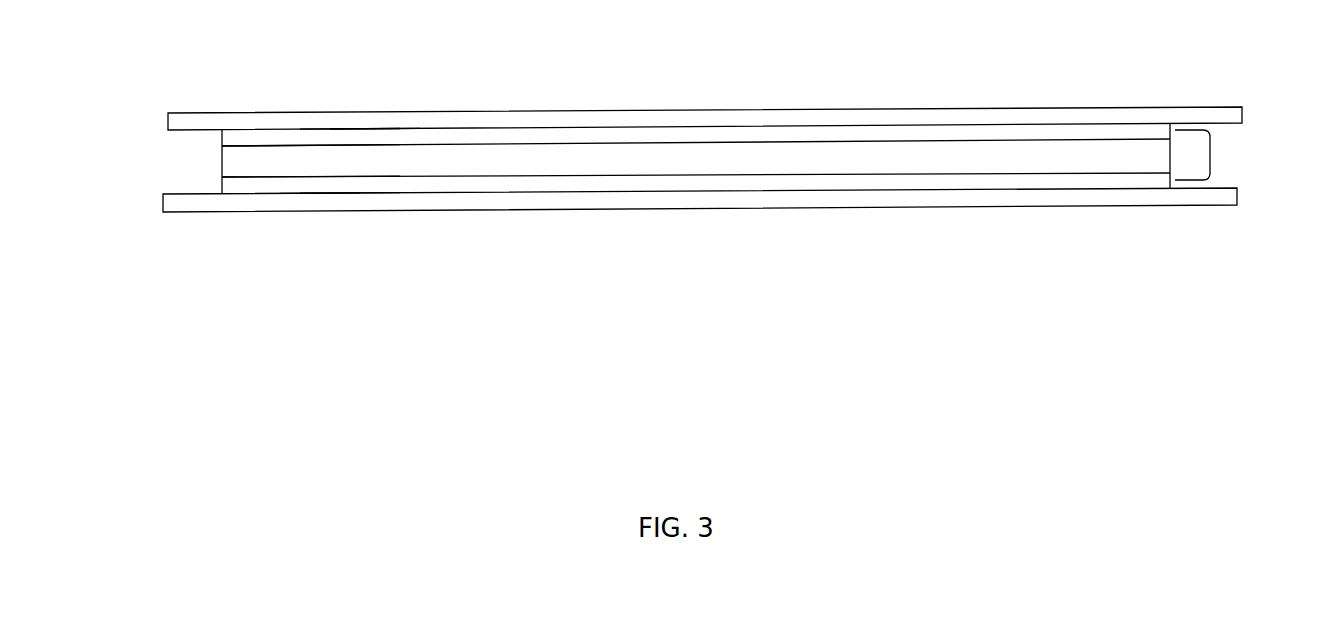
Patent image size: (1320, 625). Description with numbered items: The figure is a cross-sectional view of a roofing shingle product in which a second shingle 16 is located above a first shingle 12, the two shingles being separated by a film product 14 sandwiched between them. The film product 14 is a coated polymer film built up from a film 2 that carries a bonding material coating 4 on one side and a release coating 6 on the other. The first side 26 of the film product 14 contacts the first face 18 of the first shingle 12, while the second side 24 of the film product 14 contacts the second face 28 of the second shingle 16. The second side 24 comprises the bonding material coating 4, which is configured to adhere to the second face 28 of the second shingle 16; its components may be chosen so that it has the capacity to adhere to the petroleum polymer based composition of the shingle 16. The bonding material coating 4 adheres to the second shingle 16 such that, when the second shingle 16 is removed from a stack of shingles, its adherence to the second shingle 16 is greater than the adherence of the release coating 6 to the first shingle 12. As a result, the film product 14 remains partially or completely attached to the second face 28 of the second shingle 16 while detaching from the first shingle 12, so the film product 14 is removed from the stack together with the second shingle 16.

The film 2 is at (672, 163).
The bonding material coating 4 is at (243, 138).
The release coating 6 is at (260, 186).
The first shingle 12 is at (500, 202).
The film product 14 is at (1210, 155).
The second shingle 16 is at (585, 117).
The first face 18 is at (343, 195).
The second side 24 is at (360, 130).
The first side 26 is at (320, 195).
The second face 28 is at (345, 127).